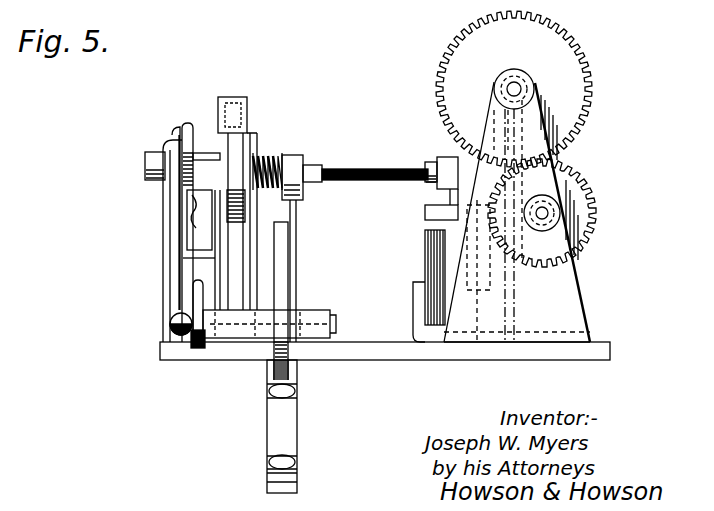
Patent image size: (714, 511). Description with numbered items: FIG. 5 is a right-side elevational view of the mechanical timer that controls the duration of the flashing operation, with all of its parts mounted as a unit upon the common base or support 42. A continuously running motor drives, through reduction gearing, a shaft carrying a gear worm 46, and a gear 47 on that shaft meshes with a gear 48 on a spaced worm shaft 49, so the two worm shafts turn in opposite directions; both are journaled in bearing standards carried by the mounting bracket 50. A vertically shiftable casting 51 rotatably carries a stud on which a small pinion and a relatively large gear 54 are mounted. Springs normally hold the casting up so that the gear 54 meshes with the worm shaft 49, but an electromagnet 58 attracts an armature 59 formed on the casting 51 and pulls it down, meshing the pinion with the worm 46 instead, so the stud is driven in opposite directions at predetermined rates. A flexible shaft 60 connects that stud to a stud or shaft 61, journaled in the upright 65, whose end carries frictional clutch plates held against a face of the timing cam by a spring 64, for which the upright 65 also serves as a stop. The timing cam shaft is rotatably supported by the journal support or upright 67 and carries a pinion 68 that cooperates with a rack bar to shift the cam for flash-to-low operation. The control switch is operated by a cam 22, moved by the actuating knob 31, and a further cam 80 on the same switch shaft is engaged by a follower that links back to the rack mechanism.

The cam 22 is at (295, 356).
The actuating knob 31 is at (289, 269).
The common base or support 42 is at (396, 361).
The gear worm 46 is at (536, 228).
The gear 47 is at (590, 189).
The gear 48 is at (585, 86).
The worm shaft 49 is at (519, 79).
The mounting bracket 50 is at (585, 305).
The vertically shiftable casting 51 is at (440, 159).
The relatively large gear 54 is at (505, 124).
The electromagnet 58 is at (425, 272).
The armature 59 is at (425, 212).
The flexible shaft 60 is at (365, 168).
The stud or shaft 61 is at (312, 168).
The spring 64 is at (270, 155).
The upright 65 is at (297, 213).
The journal support or upright 67 is at (165, 225).
The pinion 68 is at (199, 224).
The cam 80 is at (193, 292).